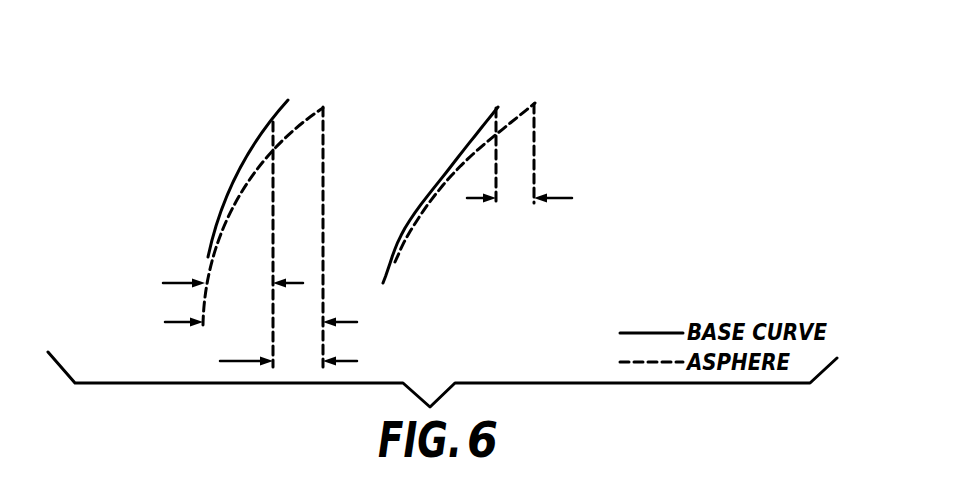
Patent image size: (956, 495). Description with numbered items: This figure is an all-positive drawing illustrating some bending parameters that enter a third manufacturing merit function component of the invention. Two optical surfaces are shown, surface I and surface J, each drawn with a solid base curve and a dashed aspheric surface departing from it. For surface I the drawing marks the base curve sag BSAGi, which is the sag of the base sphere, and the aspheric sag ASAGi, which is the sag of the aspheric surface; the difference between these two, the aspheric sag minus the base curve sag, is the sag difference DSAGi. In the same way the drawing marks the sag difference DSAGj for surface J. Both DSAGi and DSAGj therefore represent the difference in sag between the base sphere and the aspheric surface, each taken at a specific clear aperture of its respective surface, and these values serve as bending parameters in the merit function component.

The surface i I is at (230, 171).
The surface j J is at (439, 205).
The base curve sag BSAGi is at (182, 285).
The aspheric sag ASAGi is at (210, 325).
The sag difference ΔSAG_i DSAGi is at (239, 242).
The sag difference ΔSAG_j DSAGj is at (570, 161).